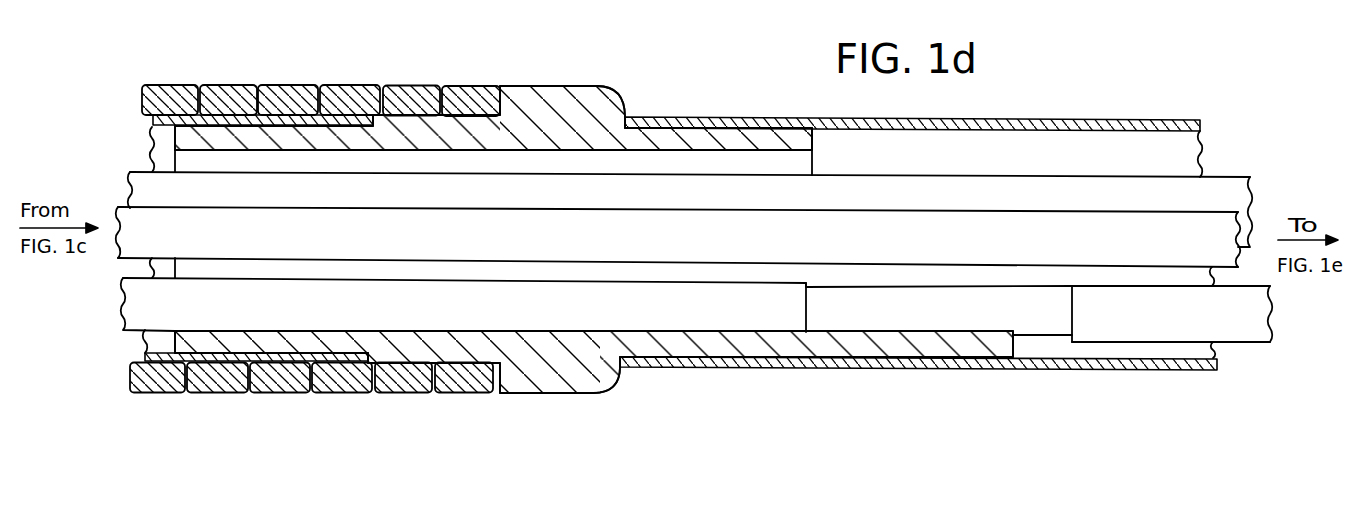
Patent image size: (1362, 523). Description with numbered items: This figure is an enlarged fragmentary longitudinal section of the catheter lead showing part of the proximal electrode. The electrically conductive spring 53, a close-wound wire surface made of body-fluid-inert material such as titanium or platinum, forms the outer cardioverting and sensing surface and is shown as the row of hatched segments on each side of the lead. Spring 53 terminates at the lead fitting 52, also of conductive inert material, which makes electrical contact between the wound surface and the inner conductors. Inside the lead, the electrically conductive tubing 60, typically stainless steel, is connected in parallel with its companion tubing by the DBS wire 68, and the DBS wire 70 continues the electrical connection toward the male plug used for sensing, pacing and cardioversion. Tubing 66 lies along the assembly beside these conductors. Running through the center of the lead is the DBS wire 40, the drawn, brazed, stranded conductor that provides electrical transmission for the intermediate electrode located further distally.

The DBS wire 40 is at (497, 261).
The lead fitting 52 is at (587, 382).
The spring 53 is at (393, 393).
The tubing 66 is at (290, 357).
The DBS wire 68 is at (743, 335).
The electrically conductive tubing 60 is at (933, 320).
The DBS wire 70 is at (1142, 328).